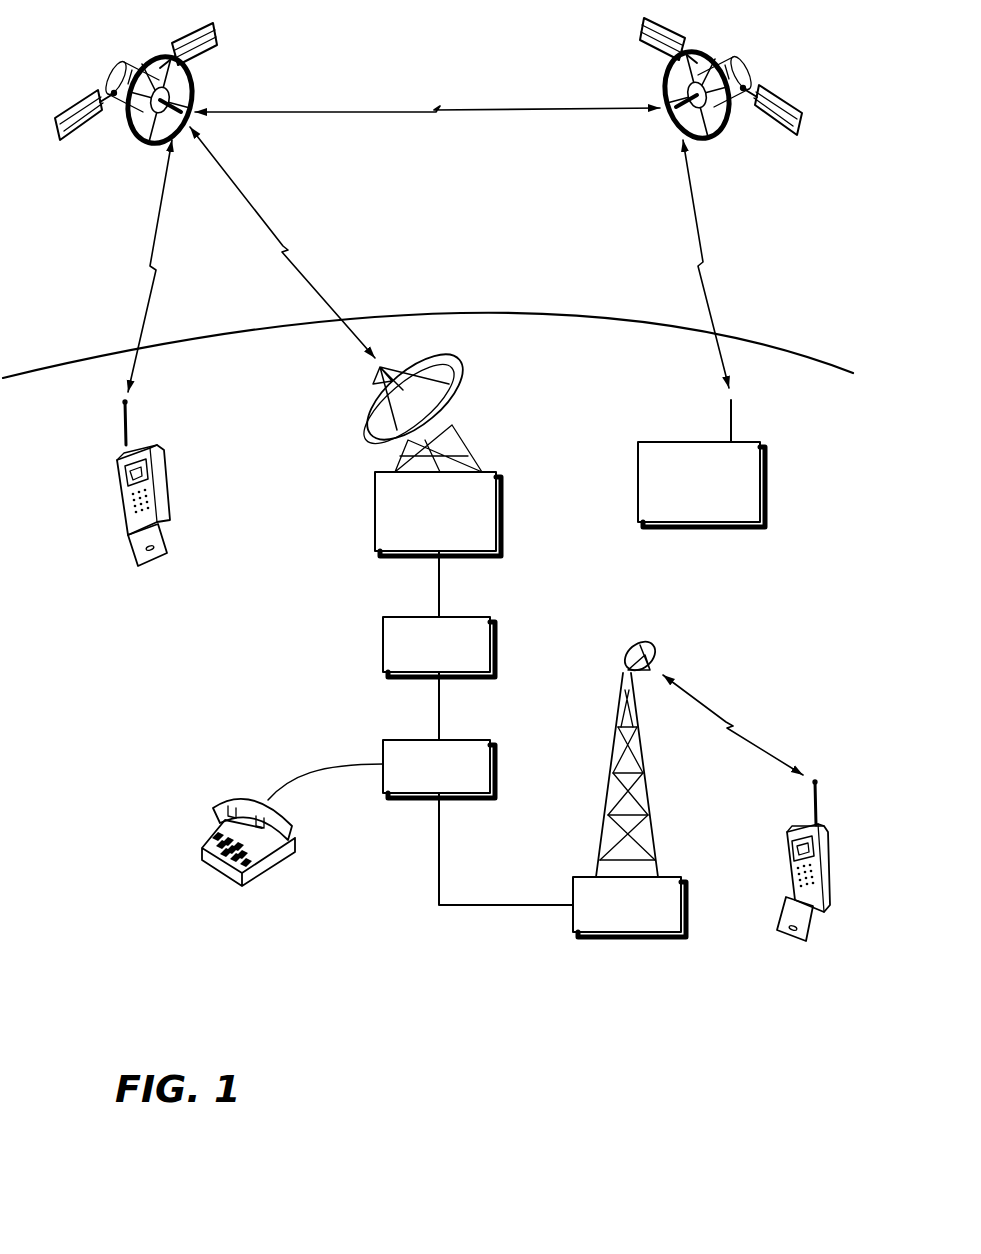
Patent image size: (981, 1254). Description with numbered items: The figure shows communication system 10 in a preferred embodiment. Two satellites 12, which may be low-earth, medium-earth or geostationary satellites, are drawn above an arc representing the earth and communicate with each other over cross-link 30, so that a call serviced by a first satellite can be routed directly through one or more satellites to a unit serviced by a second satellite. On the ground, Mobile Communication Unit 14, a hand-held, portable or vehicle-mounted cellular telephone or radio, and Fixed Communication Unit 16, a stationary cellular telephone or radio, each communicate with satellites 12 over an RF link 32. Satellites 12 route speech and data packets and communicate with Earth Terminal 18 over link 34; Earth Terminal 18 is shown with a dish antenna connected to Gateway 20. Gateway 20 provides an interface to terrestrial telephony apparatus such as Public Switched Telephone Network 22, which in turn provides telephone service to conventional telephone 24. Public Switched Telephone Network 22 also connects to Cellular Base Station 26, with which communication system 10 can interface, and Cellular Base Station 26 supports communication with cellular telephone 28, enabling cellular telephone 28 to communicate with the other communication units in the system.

The communication system 10 is at (406, 1018).
The satellites 12 is at (125, 58).
The Mobile Communication Unit 14 is at (112, 510).
The Fixed Communication Unit 16 is at (764, 478).
The Earth Terminal 18 is at (500, 508).
The Gateway 20 is at (493, 641).
The Public Switched Telephone Network 22 is at (493, 765).
The conventional telephone 24 is at (238, 795).
The Cellular Base Station 26 is at (618, 935).
The cellular telephone 28 is at (825, 890).
The cross-link 30 is at (484, 112).
The RF link 32 is at (155, 237).
The link 34 is at (312, 287).